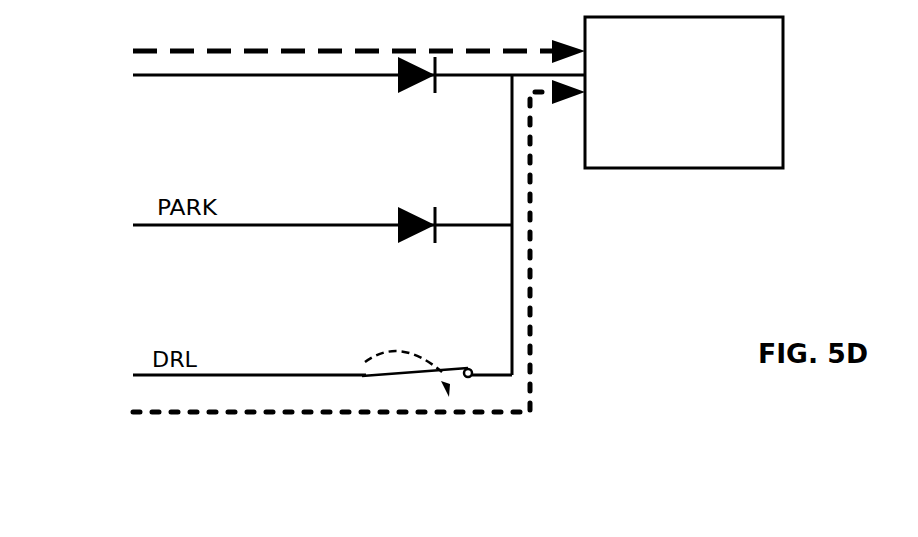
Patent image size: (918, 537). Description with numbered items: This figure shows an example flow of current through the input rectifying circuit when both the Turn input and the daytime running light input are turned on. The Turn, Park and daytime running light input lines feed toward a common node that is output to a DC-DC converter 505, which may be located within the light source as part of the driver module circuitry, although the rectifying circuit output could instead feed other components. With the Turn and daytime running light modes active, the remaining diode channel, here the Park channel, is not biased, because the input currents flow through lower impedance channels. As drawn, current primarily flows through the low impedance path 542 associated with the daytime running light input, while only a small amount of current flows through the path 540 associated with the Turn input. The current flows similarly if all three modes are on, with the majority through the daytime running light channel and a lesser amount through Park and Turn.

The DC-DC converter 505 is at (663, 141).
The path 540 is at (157, 32).
The low impedance path 542 is at (252, 440).